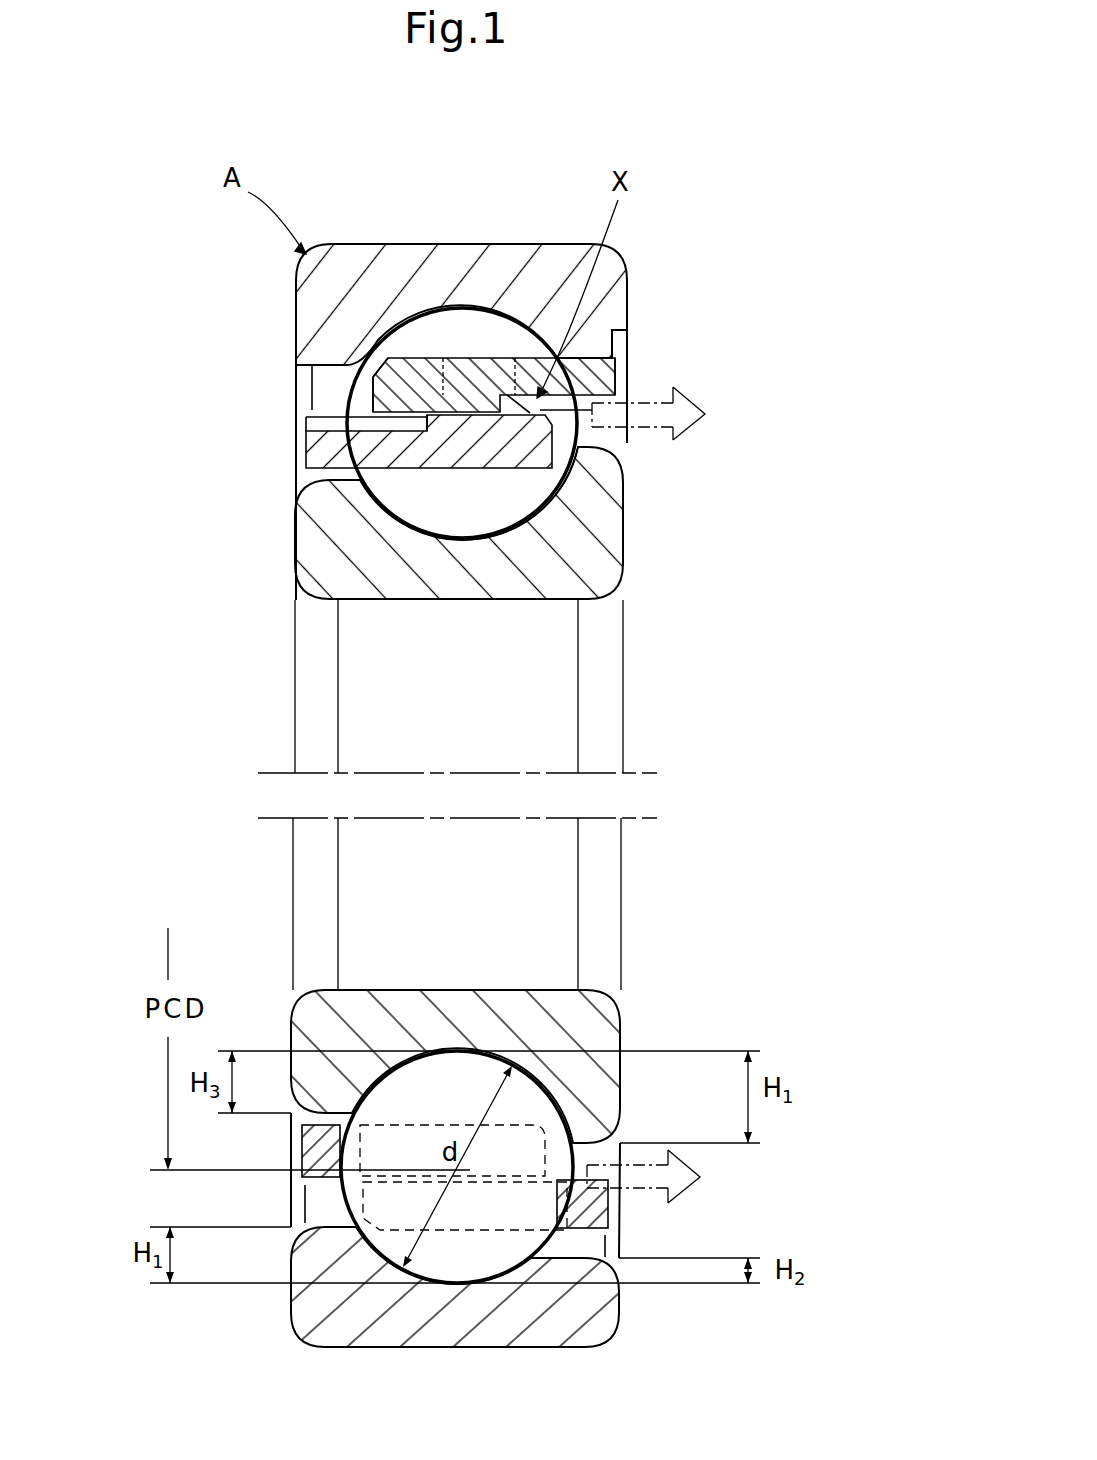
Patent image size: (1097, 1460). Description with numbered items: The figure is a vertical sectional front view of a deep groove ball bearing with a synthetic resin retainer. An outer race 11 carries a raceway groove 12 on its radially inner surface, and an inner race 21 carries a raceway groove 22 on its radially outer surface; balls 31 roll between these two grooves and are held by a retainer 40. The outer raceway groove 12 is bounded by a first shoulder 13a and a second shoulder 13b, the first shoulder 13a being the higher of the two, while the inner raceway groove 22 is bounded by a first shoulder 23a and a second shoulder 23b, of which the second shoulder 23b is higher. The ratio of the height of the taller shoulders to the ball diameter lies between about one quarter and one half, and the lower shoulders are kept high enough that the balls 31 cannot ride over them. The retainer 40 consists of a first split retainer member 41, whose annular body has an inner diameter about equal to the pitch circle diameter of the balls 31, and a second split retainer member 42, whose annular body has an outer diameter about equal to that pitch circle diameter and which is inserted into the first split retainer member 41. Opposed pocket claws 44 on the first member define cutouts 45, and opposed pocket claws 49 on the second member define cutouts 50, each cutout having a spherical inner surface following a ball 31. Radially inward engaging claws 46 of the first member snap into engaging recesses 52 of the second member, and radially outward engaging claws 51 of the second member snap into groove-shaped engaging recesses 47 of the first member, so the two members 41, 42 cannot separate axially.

The outer race 11 is at (410, 244).
The raceway groove 12 is at (455, 310).
The first shoulder 13a is at (326, 343).
The second shoulder 13b is at (627, 312).
The inner race 21 is at (325, 570).
The raceway groove 22 is at (495, 522).
The first shoulder 23a is at (320, 512).
The second shoulder 23b is at (612, 483).
The balls 31 is at (573, 434).
The retainer 40 is at (475, 357).
The first split retainer member 41 is at (620, 378).
The second split retainer member 42 is at (304, 440).
The pocket claws 44 is at (372, 380).
The cutout 45 is at (560, 1210).
The engaging claws 46 is at (417, 420).
The engaging recesses 47 is at (629, 282).
The pocket claws 49 is at (625, 537).
The cutout 50 is at (350, 1146).
The engaging claws 51 is at (545, 357).
The engaging recesses 52 is at (318, 406).